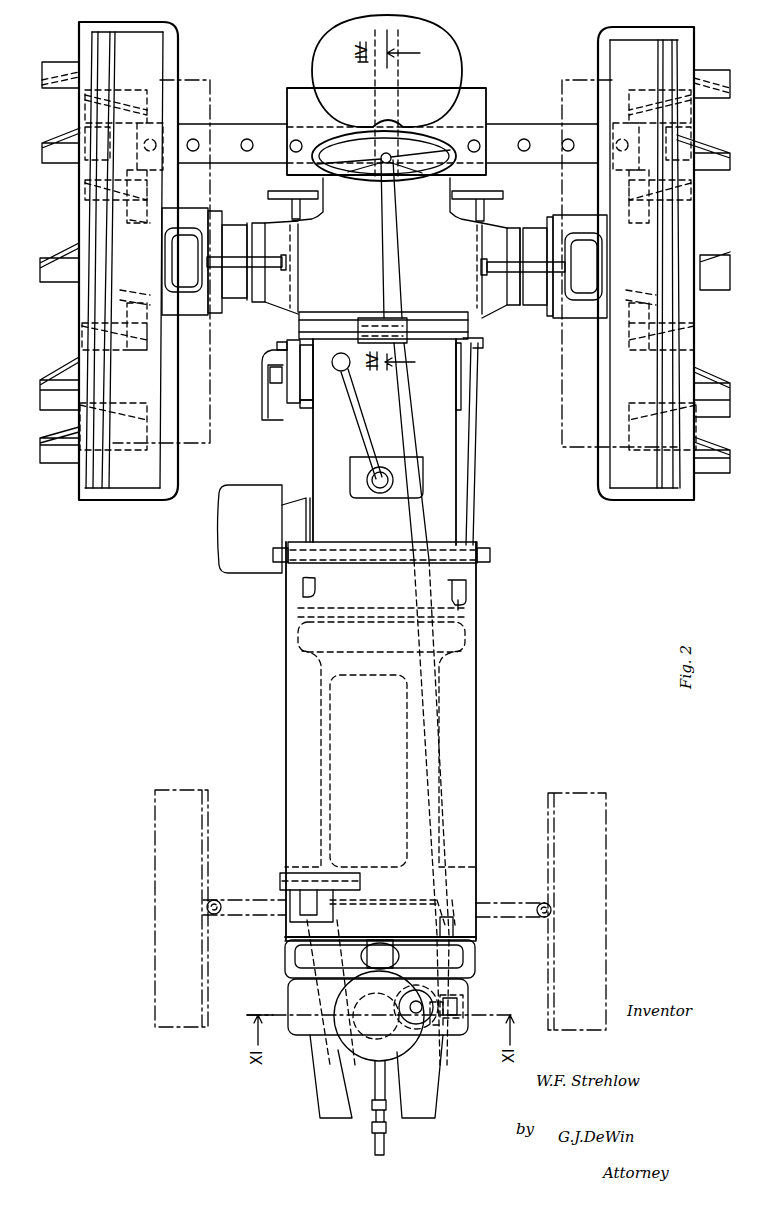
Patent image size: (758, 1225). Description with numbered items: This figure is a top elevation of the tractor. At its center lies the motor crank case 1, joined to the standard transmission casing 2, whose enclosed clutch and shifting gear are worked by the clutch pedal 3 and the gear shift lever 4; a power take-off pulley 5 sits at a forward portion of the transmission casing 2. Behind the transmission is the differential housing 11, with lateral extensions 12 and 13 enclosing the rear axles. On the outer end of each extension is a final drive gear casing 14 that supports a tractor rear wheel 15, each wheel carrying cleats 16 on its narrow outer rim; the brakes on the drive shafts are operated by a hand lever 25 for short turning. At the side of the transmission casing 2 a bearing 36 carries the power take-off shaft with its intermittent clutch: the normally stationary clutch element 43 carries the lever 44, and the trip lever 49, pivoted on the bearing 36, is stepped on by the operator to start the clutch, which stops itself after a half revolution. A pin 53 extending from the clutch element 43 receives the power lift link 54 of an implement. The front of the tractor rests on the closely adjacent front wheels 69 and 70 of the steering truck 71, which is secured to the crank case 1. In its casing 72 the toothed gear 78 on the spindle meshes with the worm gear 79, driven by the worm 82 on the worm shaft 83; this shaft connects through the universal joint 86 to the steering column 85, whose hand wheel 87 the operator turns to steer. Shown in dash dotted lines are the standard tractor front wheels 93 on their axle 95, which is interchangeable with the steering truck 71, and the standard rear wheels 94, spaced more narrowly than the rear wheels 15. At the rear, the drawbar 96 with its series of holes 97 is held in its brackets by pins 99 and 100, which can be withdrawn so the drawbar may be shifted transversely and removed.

The motor crank case 1 is at (321, 752).
The transmission casing 2 is at (455, 462).
The clutch pedal 3 is at (501, 194).
The gear shift lever 4 is at (355, 411).
The power take-off pulley 5 is at (234, 571).
The differential housing 11 is at (317, 215).
The lateral extension 12 is at (250, 298).
The lateral extension 13 is at (506, 308).
The final drive gear casing 14 is at (152, 352).
The tractor rear wheel 15 is at (70, 328).
The cleats 16 is at (50, 88).
The hand lever 25 is at (282, 262).
The bearing 36 is at (312, 409).
The clutch element 43 is at (295, 404).
The lever 44 is at (283, 419).
The trip lever 49 is at (282, 210).
The pin 53 is at (277, 346).
The power lift link 54 is at (260, 385).
The front wheel 69 is at (442, 1075).
The front wheel 70 is at (318, 1093).
The steering truck 71 is at (304, 1047).
The casing 72 is at (288, 1001).
The toothed gear 78 is at (386, 1037).
The worm gear 79 is at (412, 1025).
The worm 82 is at (464, 1001).
The worm shaft 83 is at (412, 962).
The steering column 85 is at (401, 416).
The universal joint 86 is at (450, 926).
The hand wheel 87 is at (409, 177).
The standard tractor front wheels 93 is at (155, 820).
The standard rear wheels 94 is at (208, 80).
The axle 95 is at (247, 900).
The drawbar 96 is at (241, 126).
The holes 97 is at (250, 138).
The pin 99 is at (135, 146).
The pin 100 is at (635, 147).